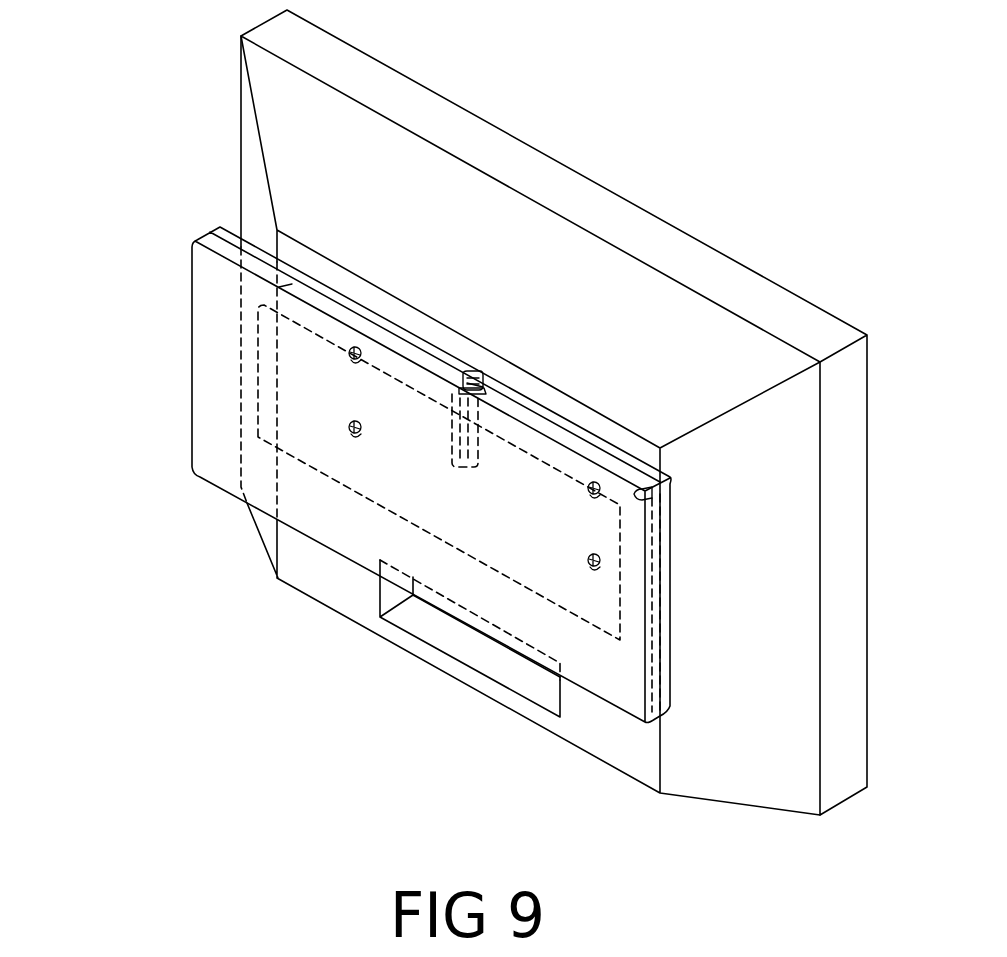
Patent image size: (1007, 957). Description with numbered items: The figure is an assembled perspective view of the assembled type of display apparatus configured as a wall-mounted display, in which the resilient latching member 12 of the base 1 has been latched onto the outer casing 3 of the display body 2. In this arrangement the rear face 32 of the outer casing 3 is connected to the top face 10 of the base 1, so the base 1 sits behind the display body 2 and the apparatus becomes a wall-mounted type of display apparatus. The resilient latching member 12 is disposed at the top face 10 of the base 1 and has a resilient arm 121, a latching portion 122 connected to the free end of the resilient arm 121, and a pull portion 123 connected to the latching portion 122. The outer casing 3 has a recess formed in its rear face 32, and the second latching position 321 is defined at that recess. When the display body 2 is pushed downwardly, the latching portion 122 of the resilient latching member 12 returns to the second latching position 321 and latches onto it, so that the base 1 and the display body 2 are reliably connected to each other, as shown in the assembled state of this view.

The base 1 is at (174, 418).
The display body 2 is at (780, 275).
The outer casing 3 is at (240, 183).
The top face 10 is at (652, 563).
The resilient latching member 12 is at (557, 254).
The resilient arm 121 is at (442, 384).
The latching portion 122 is at (457, 377).
The pull portion 123 is at (463, 385).
The rear face 32 is at (583, 722).
The second latching position 321 is at (467, 385).